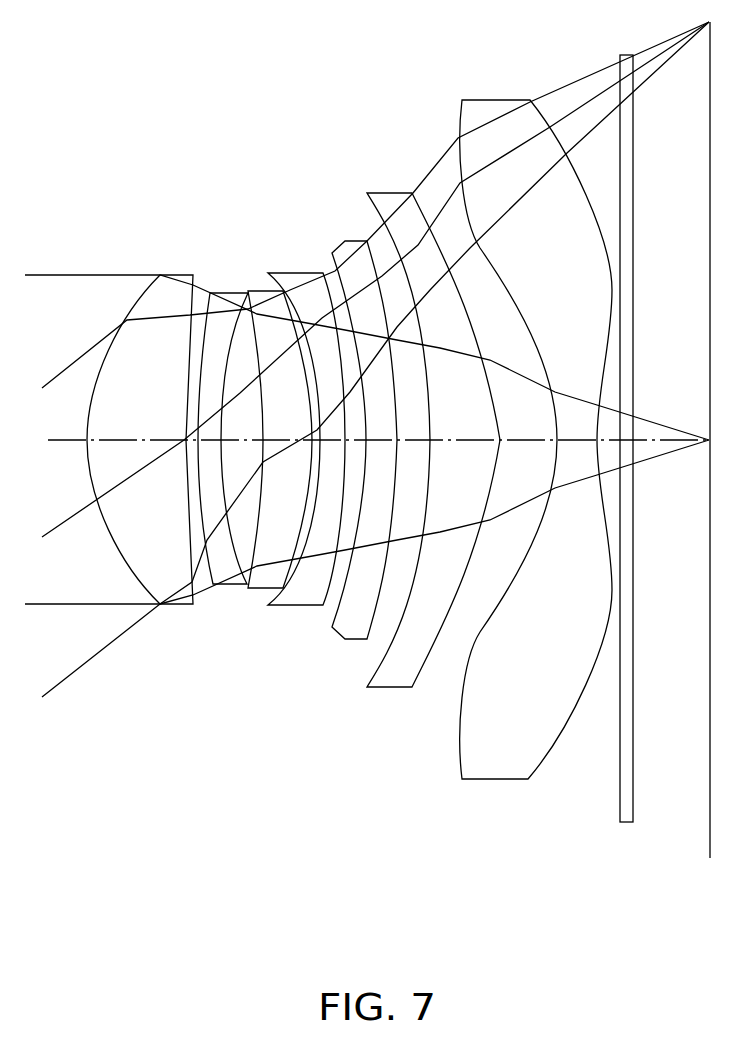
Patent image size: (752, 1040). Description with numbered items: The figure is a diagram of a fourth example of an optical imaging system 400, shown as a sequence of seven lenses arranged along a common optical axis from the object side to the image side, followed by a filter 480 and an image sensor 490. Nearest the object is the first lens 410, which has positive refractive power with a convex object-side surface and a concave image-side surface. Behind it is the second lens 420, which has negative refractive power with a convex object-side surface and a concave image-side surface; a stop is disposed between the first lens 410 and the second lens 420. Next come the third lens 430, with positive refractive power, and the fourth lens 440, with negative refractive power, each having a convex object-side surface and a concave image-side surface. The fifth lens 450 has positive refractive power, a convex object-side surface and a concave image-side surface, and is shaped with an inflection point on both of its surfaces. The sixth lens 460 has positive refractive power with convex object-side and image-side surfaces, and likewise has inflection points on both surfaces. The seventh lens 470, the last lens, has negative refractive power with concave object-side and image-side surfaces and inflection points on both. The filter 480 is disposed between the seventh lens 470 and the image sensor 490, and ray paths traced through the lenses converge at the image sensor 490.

The optical imaging system 400 is at (369, 138).
The first lens 410 is at (170, 607).
The second lens 420 is at (215, 588).
The third lens 430 is at (260, 591).
The fourth lens 440 is at (300, 608).
The fifth lens 450 is at (340, 641).
The sixth lens 460 is at (385, 689).
The seventh lens 470 is at (493, 781).
The filter 480 is at (622, 824).
The image sensor 490 is at (708, 833).